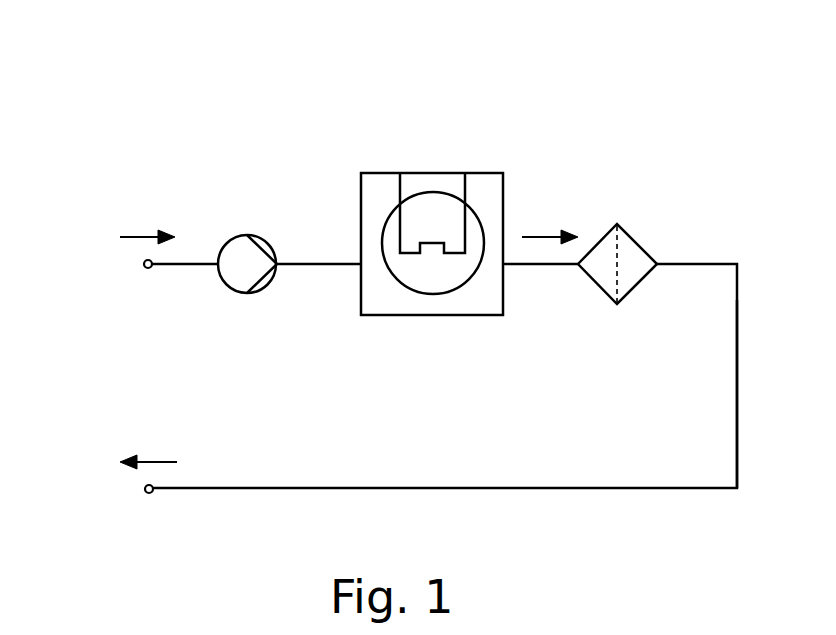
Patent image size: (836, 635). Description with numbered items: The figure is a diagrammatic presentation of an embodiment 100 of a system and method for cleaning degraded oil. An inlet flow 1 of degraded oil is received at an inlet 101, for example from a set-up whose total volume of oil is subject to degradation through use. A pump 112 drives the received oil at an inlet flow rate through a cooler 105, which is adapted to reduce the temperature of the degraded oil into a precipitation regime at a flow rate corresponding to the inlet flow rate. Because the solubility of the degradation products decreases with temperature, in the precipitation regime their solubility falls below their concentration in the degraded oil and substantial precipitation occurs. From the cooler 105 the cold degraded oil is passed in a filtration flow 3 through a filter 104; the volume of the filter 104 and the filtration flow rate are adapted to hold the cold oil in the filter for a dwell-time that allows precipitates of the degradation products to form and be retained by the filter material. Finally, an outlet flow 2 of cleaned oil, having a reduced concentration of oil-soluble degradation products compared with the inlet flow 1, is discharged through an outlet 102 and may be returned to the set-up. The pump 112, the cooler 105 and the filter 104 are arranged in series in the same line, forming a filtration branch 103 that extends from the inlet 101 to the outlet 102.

The embodiment 100 is at (150, 156).
The inlet 101 is at (148, 268).
The outlet 102 is at (149, 493).
The filtration branch 103 is at (737, 441).
The filter 104 is at (637, 242).
The cooler 105 is at (442, 182).
The pump 112 is at (248, 234).
The inlet flow 1 is at (147, 226).
The outlet flow 2 is at (148, 446).
The filtration flow 3 is at (550, 227).